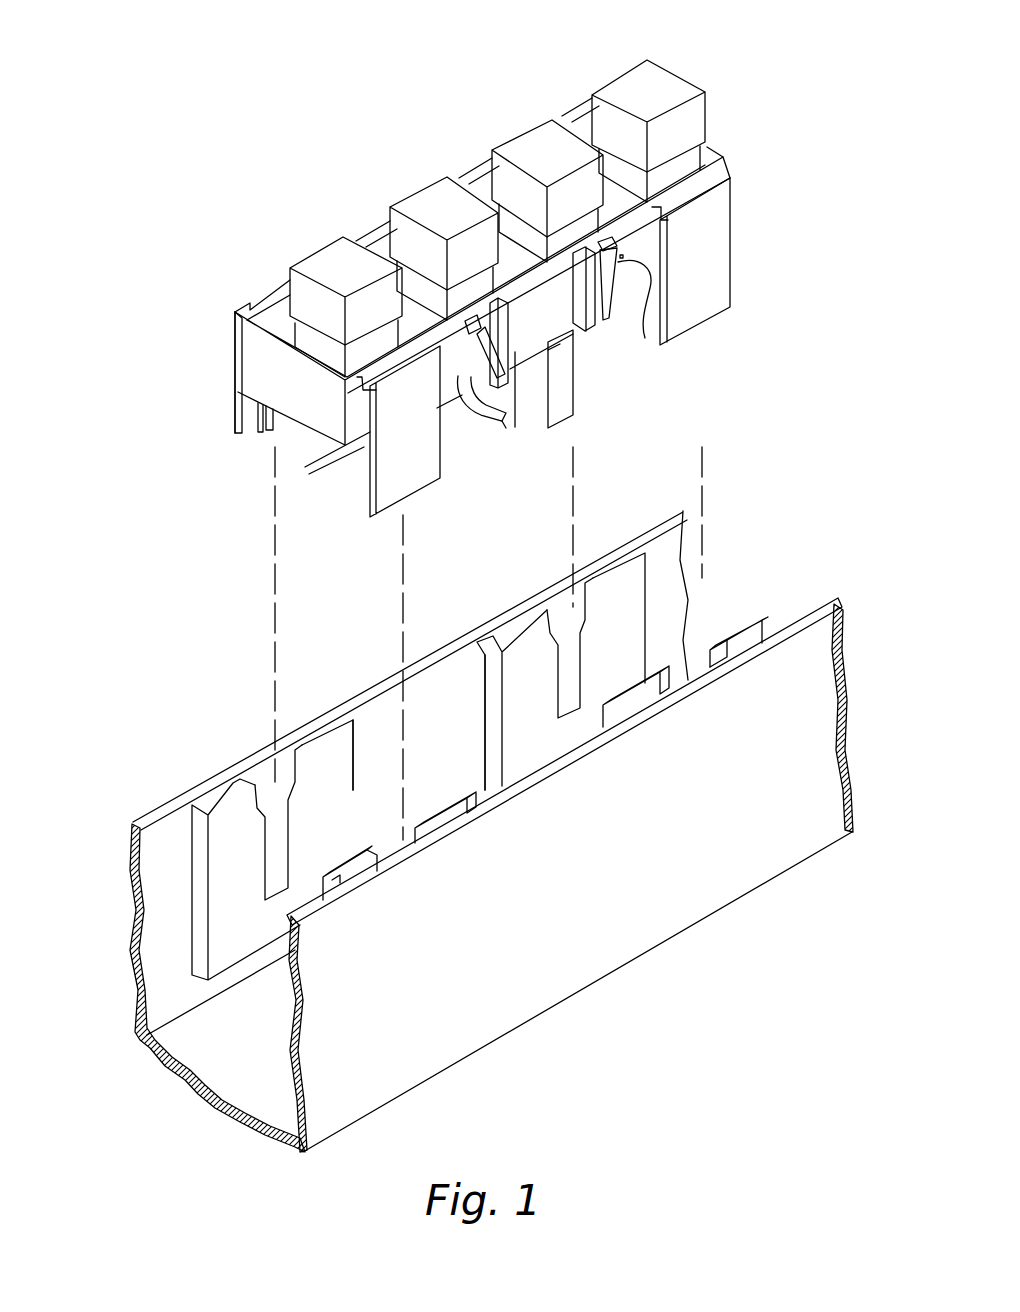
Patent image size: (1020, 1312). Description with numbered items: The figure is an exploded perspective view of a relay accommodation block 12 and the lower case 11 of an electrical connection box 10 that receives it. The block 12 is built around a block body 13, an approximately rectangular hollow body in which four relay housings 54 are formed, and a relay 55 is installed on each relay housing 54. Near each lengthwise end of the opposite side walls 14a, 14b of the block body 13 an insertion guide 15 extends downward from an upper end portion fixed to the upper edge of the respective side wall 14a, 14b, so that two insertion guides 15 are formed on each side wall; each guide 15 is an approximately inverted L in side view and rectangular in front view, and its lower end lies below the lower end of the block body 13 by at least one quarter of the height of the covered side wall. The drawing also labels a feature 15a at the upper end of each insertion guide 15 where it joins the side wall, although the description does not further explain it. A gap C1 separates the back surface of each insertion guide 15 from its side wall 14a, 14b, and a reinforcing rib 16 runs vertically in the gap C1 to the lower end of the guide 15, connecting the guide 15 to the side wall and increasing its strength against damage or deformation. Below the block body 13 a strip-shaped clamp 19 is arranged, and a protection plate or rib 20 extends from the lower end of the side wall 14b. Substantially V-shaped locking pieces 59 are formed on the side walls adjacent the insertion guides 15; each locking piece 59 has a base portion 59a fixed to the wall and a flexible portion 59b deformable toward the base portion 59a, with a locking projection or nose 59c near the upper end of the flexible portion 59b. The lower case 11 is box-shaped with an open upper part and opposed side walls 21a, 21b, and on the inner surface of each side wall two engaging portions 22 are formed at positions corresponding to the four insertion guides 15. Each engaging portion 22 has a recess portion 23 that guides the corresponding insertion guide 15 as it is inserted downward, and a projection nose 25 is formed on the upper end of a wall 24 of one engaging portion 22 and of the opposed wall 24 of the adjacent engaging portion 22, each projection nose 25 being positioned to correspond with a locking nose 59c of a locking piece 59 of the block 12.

The electrical connection box 10 is at (718, 71).
The lower case 11 is at (828, 534).
The relay accommodation block 12 is at (757, 187).
The block body 13 is at (724, 154).
The side wall 14a is at (572, 340).
The side wall 14b is at (233, 312).
The insertion guide 15 is at (238, 413).
The notch 15a is at (366, 392).
The reinforcing rib 16 is at (258, 436).
The clamp 19 is at (505, 426).
The protection plate or rib 20 is at (563, 398).
The side wall 21a is at (600, 979).
The side wall 21b is at (160, 903).
The engaging portion 22 is at (228, 848).
The recess portion 23 is at (250, 783).
The wall 24 is at (493, 677).
The projection nose 25 is at (488, 645).
The relay housing 54 is at (368, 344).
The relay 55 is at (323, 253).
The locking piece 59 is at (572, 283).
The base portion 59a is at (502, 380).
The flexible portion 59b is at (466, 334).
The locking projection or nose 59c is at (465, 398).
The gap C1 is at (354, 491).